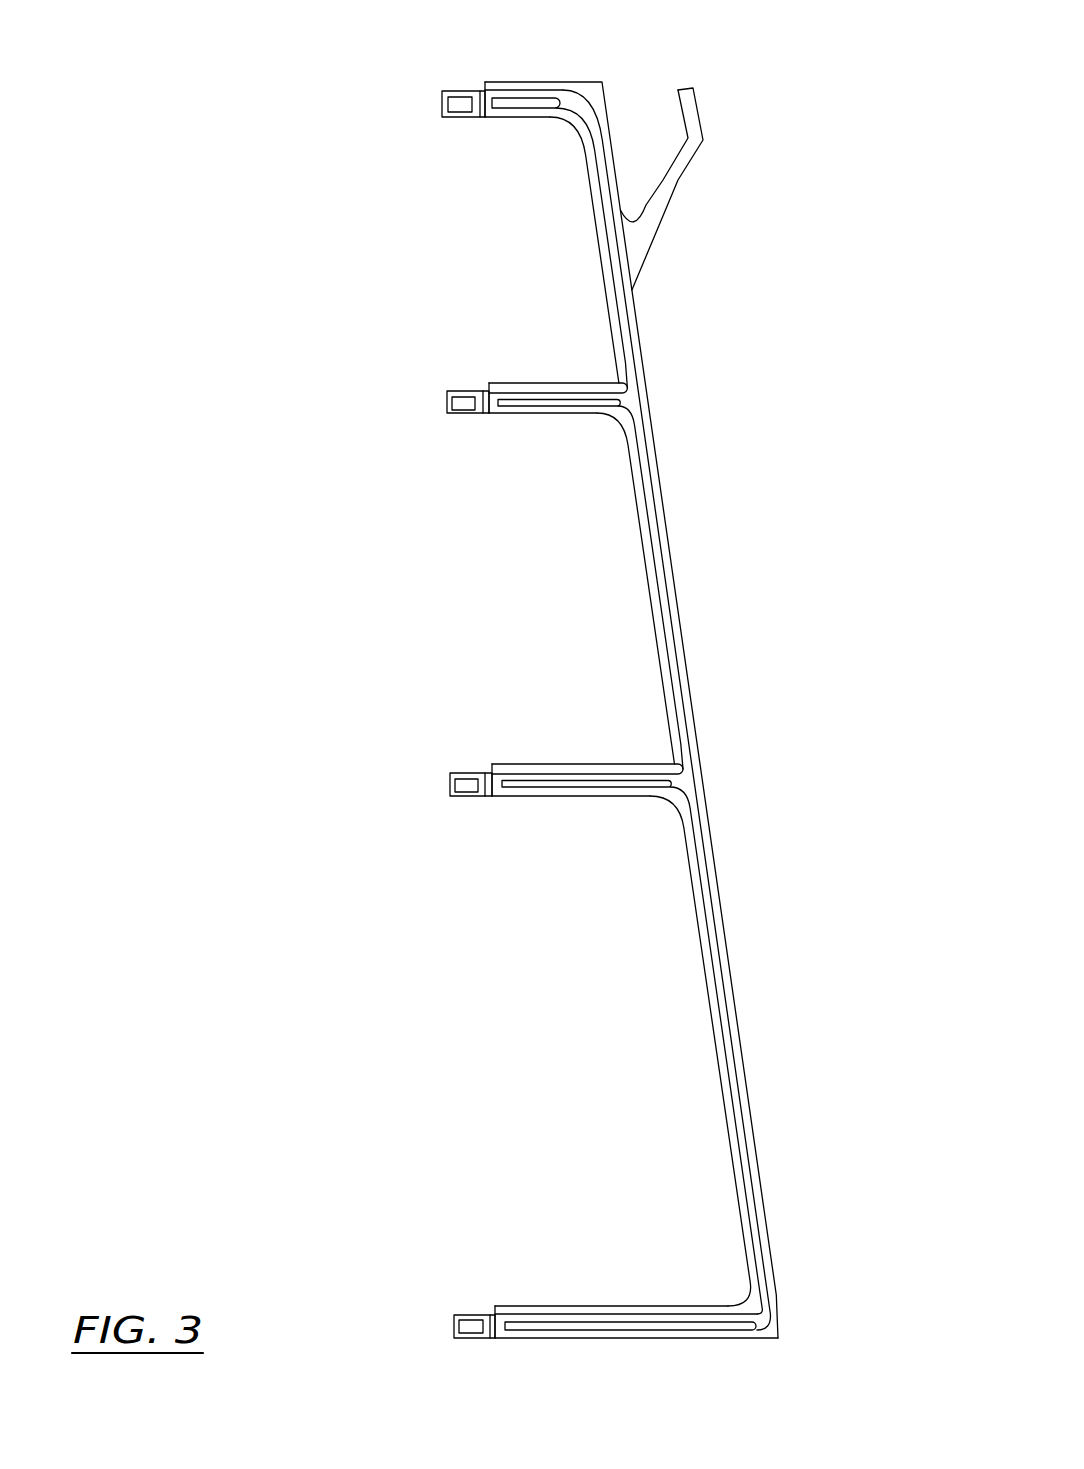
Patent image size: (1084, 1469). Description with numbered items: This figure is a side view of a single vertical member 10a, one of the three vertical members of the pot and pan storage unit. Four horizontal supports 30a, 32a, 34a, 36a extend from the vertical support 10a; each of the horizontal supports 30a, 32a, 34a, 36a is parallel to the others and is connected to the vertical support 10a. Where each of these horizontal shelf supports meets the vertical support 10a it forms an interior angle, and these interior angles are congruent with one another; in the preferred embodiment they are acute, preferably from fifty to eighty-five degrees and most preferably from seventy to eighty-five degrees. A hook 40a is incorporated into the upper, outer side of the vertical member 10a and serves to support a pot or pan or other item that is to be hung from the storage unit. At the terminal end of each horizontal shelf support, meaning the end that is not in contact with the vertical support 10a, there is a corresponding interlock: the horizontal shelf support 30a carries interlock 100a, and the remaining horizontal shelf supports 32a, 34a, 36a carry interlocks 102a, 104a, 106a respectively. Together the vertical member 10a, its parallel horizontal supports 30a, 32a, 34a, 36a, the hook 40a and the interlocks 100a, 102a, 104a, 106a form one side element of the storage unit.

The vertical member 10a is at (667, 695).
The horizontal support 30a is at (607, 1327).
The horizontal support 32a is at (571, 793).
The horizontal support 34a is at (543, 398).
The horizontal support 36a is at (558, 105).
The hook 40a is at (697, 157).
The interlock 100a is at (462, 1326).
The interlock 102a is at (465, 786).
The interlock 104a is at (458, 403).
The interlock 106a is at (462, 107).